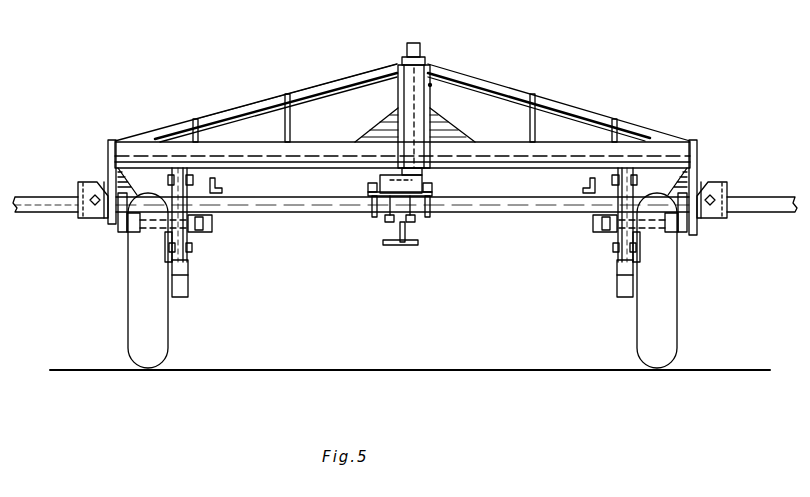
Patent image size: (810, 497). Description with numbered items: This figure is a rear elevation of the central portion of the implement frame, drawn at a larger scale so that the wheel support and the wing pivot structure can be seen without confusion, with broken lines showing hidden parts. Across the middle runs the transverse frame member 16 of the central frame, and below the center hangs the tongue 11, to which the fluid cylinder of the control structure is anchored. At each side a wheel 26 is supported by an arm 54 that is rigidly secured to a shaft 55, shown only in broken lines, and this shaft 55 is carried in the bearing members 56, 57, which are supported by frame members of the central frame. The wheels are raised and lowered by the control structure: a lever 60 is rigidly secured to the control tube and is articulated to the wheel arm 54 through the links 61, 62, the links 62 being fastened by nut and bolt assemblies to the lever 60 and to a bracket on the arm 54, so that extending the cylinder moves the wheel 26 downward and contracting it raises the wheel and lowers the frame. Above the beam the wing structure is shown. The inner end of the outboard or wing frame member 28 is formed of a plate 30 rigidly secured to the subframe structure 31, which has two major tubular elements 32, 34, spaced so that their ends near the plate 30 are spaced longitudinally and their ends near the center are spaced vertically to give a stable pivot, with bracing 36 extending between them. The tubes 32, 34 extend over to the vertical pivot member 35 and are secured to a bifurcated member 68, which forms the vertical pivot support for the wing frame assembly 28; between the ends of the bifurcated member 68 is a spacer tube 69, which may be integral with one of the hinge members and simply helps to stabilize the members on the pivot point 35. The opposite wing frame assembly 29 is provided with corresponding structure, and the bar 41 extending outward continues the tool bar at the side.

The tongue 11 is at (418, 244).
The transverse frame member 16 is at (288, 200).
The wheel 26 is at (130, 311).
The frame member 28 is at (35, 182).
The wing frame assembly 29 is at (758, 183).
The plate 30 is at (110, 158).
The subframe structure 31 is at (273, 95).
The tubular element 32 is at (345, 147).
The tubular element 34 is at (347, 79).
The vertical pivot member 35 is at (420, 50).
The bracing 36 is at (197, 124).
The tool bar 41 is at (32, 213).
The arm 54 is at (186, 278).
The shaft 55 is at (189, 230).
The bearing member 56 is at (125, 233).
The bearing member 57 is at (207, 234).
The lever 60 is at (171, 173).
The link 61 is at (188, 258).
The link 62 is at (170, 236).
The bifurcated member 68 is at (397, 103).
The spacer tube 69 is at (88, 228).